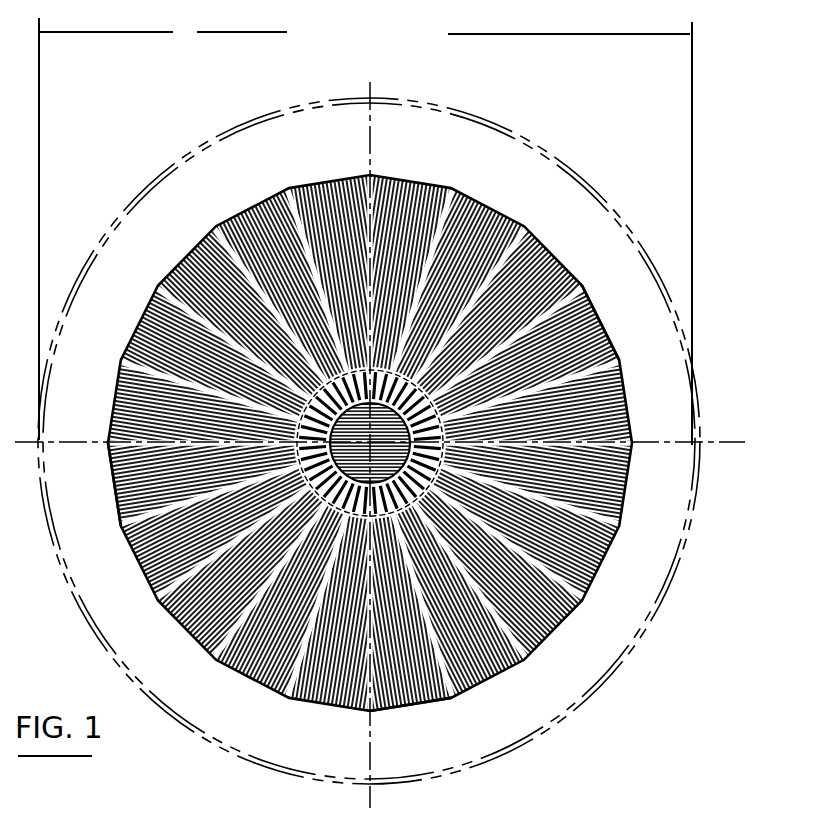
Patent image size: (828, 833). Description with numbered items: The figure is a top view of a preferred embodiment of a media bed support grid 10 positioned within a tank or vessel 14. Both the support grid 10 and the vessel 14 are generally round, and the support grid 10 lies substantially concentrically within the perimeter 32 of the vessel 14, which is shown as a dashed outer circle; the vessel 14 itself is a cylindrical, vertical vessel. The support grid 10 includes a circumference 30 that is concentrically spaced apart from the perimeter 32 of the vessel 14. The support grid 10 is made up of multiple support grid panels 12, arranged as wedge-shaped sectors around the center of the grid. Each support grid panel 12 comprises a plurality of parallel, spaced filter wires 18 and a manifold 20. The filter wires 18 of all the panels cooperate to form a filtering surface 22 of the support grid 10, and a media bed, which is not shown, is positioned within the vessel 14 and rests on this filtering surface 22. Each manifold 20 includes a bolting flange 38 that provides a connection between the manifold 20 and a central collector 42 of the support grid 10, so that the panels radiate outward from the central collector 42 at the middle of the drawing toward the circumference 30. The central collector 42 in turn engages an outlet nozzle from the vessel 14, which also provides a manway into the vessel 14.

The media bed support grid 10 is at (373, 443).
The support grid panel 12 is at (337, 178).
The vessel 14 is at (702, 530).
The filter wire 18 is at (462, 196).
The manifold 20 is at (233, 250).
The filtering surface 22 is at (163, 328).
The circumference 30 is at (116, 500).
The perimeter 32 is at (90, 623).
The bolting flange 38 is at (413, 706).
The central collector 42 is at (597, 315).